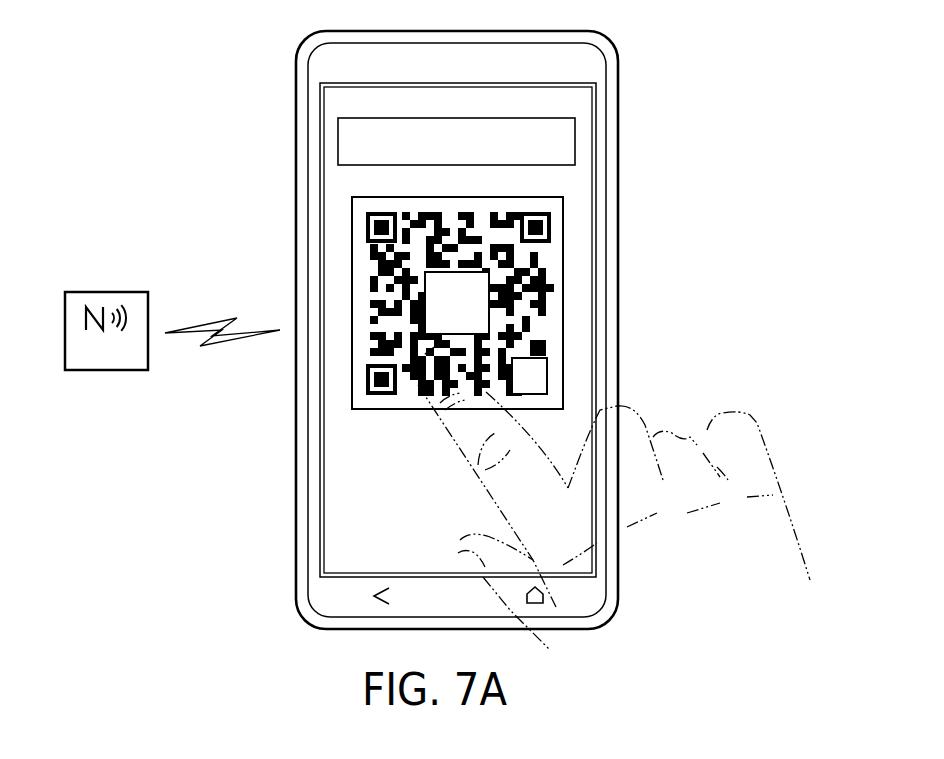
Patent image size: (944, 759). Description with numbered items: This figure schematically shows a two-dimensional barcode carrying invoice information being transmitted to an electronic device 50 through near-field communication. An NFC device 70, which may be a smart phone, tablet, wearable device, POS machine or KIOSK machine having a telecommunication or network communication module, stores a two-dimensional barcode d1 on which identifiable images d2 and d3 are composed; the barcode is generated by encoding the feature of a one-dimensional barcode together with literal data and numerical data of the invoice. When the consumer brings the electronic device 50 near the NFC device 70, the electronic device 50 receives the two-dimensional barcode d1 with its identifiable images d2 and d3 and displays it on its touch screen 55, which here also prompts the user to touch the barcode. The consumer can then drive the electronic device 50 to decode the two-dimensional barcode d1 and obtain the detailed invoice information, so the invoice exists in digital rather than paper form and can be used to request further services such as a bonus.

The electronic device 50 is at (592, 70).
The touch screen 55 is at (578, 144).
The 2D barcode d1 is at (483, 206).
The identifiable image d2 is at (480, 295).
The identifiable image d3 is at (546, 374).
The NFC device 70 is at (105, 292).